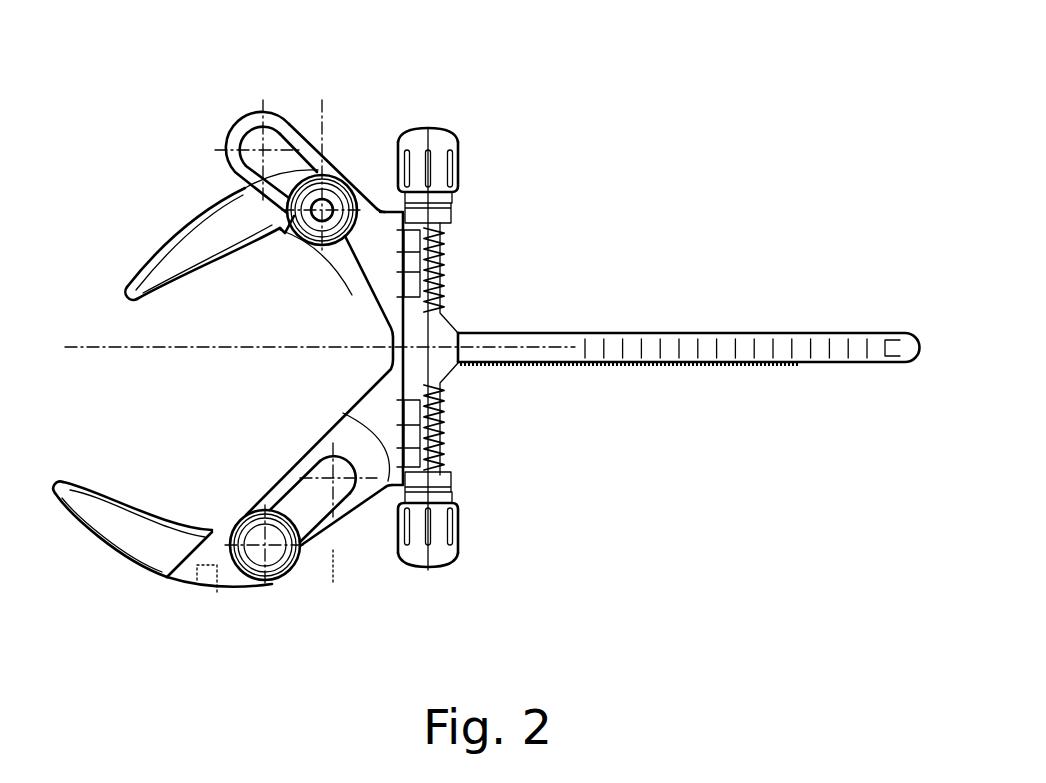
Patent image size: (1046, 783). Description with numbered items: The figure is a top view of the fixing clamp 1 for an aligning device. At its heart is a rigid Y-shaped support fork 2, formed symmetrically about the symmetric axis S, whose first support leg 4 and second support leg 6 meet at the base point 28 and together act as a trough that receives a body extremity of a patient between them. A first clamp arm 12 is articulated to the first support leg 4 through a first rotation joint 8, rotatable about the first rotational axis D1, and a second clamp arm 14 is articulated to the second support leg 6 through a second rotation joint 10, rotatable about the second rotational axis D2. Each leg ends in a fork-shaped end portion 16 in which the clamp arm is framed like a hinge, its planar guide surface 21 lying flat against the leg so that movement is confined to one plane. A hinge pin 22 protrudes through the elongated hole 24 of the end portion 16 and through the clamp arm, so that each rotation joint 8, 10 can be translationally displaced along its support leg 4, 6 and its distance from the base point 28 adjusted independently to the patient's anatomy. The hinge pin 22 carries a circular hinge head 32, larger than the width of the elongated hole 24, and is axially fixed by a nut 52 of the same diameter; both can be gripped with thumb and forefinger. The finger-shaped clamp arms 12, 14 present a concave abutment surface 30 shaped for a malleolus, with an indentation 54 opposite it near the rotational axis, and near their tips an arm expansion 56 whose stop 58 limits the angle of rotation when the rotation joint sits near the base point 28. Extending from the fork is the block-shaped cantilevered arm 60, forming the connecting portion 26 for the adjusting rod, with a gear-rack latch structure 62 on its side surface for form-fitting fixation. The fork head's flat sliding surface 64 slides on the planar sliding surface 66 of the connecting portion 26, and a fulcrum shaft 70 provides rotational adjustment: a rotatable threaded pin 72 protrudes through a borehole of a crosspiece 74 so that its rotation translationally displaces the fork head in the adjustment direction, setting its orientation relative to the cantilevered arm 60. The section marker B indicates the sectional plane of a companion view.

The fixing clamp 1 is at (122, 125).
The support fork 2 is at (386, 207).
The first support leg 4 is at (358, 282).
The second support leg 6 is at (362, 401).
The first rotation joint 8 is at (334, 174).
The second rotation joint 10 is at (277, 588).
The first clamp arm 12 is at (176, 224).
The second clamp arm 14 is at (112, 515).
The end portion 16 is at (277, 115).
The guide surface 21 is at (285, 238).
The hinge pin 22 is at (321, 172).
The elongated hole 24 is at (252, 122).
The connecting portion 26 is at (617, 265).
The base point 28 is at (376, 348).
The concave abutment surface 30 is at (162, 283).
The hinge head 32 is at (288, 575).
The nut 52 is at (357, 185).
The indentation 54 is at (237, 578).
The arm expansion 56 is at (203, 237).
The stop 58 is at (280, 232).
The cantilevered arm 60 is at (687, 350).
The latch structure 62 is at (732, 365).
The sliding surface 64 is at (407, 425).
The sliding surface 66 is at (440, 296).
The fulcrum shaft 70 is at (493, 524).
The threaded pin 72 is at (443, 445).
The crosspiece 74 is at (440, 218).
The section plane B- B is at (269, 581).
The first rotational axis D1 is at (336, 178).
The second rotational axis D2 is at (295, 587).
The symmetric axis S is at (82, 350).